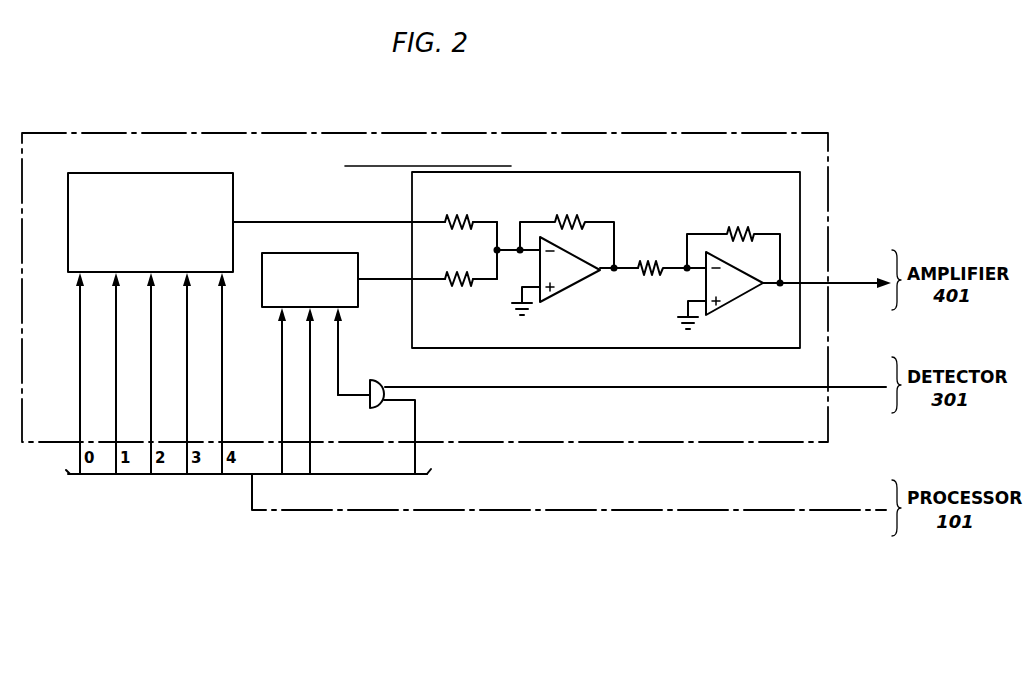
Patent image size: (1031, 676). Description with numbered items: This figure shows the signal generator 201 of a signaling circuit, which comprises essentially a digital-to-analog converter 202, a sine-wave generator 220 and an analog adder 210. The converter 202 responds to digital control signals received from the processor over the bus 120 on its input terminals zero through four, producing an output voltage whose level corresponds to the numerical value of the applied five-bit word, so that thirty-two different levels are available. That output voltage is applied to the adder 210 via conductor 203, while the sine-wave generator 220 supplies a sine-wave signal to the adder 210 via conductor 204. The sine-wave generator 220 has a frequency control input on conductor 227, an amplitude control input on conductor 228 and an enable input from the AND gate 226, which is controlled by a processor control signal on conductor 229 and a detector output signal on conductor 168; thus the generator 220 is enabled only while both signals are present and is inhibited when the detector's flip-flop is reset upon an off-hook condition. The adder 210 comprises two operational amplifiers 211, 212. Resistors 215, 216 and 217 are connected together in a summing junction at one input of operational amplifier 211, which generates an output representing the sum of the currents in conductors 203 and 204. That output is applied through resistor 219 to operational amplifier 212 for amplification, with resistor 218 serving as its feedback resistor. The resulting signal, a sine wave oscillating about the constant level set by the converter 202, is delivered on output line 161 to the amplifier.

The signal generator 201 is at (428, 132).
The digital-to-analog converter 202 is at (162, 173).
The conductor 203 is at (316, 221).
The conductor 204 is at (382, 279).
The analog adder 210 is at (607, 172).
The operational amplifier 211 is at (571, 284).
The operational amplifier 212 is at (736, 298).
The resistor 215 is at (465, 217).
The resistor 216 is at (463, 287).
The resistor 217 is at (560, 217).
The feedback resistor 218 is at (740, 224).
The resistor 219 is at (652, 259).
The sine-wave generator 220 is at (288, 254).
The AND gate 226 is at (375, 380).
The conductor 227 is at (282, 344).
The conductor 228 is at (310, 372).
The conductor 229 is at (415, 414).
The output line to amplifier 161 is at (855, 281).
The conductor 168 is at (853, 383).
The bus 120 is at (850, 505).